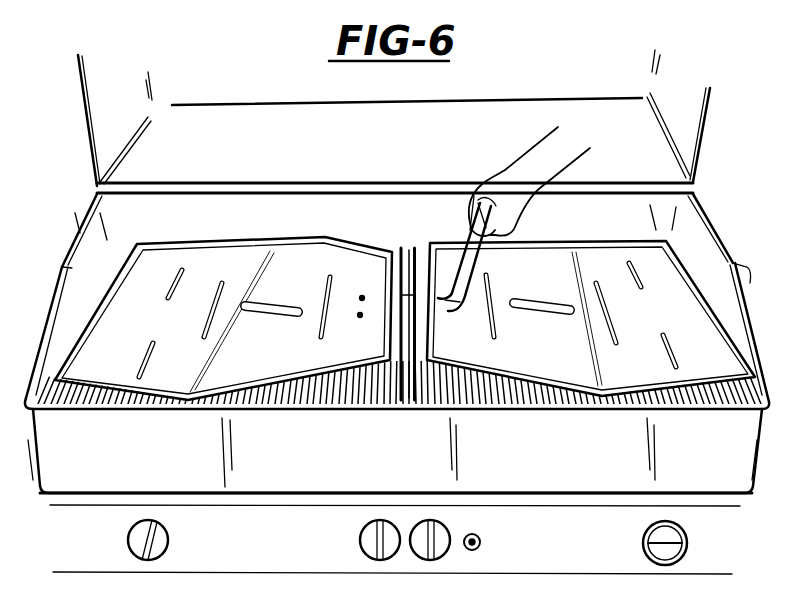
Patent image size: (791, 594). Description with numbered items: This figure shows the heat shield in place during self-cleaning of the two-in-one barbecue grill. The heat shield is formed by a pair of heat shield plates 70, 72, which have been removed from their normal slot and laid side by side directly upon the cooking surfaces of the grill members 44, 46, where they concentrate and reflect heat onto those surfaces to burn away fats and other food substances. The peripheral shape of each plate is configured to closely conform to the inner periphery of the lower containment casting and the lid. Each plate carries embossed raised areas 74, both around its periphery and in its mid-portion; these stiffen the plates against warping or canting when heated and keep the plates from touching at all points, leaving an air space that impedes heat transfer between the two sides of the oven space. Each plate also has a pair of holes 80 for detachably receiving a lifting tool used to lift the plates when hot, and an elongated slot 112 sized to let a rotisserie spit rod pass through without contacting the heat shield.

The grill member 44 is at (332, 395).
The grill member 46 is at (503, 398).
The heat shield plate 70 is at (233, 258).
The heat shield plate 72 is at (642, 252).
The embossed raised areas 74 is at (181, 268).
The holes 80 is at (360, 315).
The elongated slot 112 is at (287, 301).